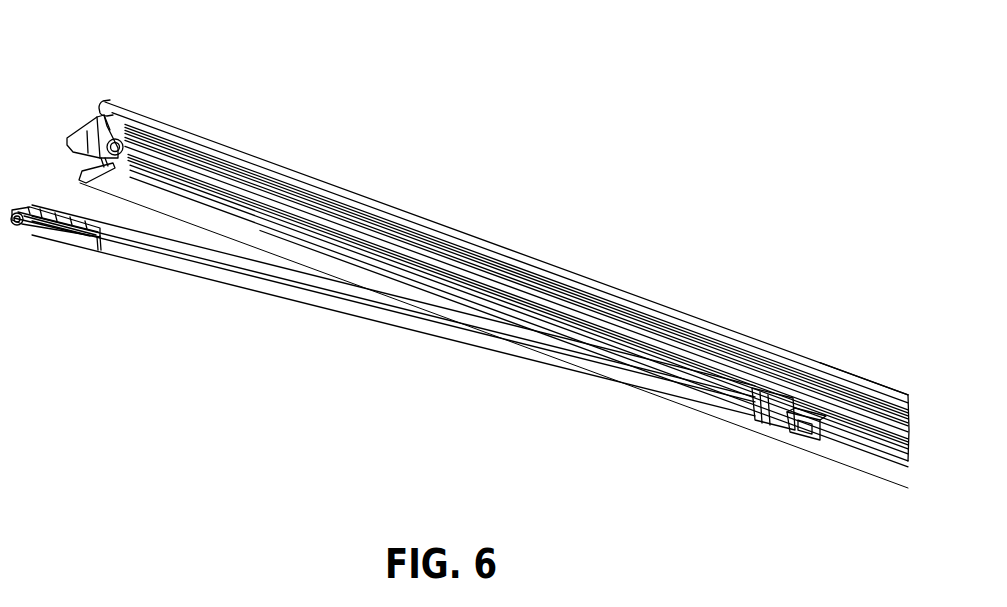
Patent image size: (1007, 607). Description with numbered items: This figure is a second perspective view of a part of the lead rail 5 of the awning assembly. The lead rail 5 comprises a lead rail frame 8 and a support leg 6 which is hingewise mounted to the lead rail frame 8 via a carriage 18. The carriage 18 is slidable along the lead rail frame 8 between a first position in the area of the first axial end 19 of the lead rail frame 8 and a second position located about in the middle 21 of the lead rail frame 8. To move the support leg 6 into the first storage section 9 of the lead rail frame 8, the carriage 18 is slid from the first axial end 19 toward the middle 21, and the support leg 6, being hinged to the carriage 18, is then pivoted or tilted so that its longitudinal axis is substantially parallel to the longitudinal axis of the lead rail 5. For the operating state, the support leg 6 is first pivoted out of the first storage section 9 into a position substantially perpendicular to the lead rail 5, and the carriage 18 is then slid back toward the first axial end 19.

The lead rail 5 is at (504, 258).
The support leg 6 is at (247, 283).
The lead rail frame 8 is at (484, 243).
The first storage section 9 is at (125, 190).
The carriage 18 is at (796, 440).
The first axial end 19 is at (84, 110).
The middle 21 is at (800, 350).